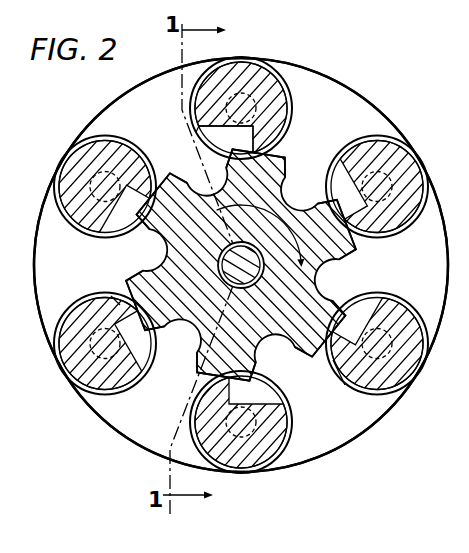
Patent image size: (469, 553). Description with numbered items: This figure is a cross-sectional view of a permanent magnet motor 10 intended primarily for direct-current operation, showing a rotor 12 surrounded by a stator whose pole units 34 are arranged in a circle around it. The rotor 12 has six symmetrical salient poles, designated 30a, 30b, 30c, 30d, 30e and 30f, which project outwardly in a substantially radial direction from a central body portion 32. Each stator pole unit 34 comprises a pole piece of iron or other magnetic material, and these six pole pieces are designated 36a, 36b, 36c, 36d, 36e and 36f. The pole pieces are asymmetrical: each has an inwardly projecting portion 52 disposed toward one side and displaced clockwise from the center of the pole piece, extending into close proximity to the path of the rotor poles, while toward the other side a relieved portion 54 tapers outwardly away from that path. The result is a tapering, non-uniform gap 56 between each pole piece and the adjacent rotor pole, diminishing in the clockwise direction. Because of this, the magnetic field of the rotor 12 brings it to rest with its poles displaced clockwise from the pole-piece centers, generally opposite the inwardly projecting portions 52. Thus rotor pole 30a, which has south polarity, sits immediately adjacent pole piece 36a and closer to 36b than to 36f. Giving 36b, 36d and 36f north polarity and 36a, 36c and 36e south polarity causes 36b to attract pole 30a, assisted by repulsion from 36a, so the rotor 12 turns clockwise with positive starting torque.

The permanent magnet motor 10 is at (95, 472).
The rotor 12 is at (270, 314).
The rotor pole 30a is at (300, 165).
The rotor pole 30b is at (346, 262).
The rotor pole 30c is at (286, 354).
The rotor pole 30d is at (177, 371).
The rotor pole 30e is at (142, 270).
The rotor pole 30f is at (194, 172).
The central body portion 32 is at (299, 218).
The stator pole unit 34 is at (251, 54).
The stator pole piece 36a is at (282, 77).
The stator pole piece 36b is at (414, 152).
The stator pole piece 36c is at (382, 398).
The stator pole piece 36d is at (253, 470).
The stator pole piece 36e is at (80, 394).
The stator pole piece 36f is at (86, 160).
The inwardly projecting portion 52 is at (292, 163).
The relieved portion 54 is at (192, 127).
The tapering gap 56 is at (192, 133).